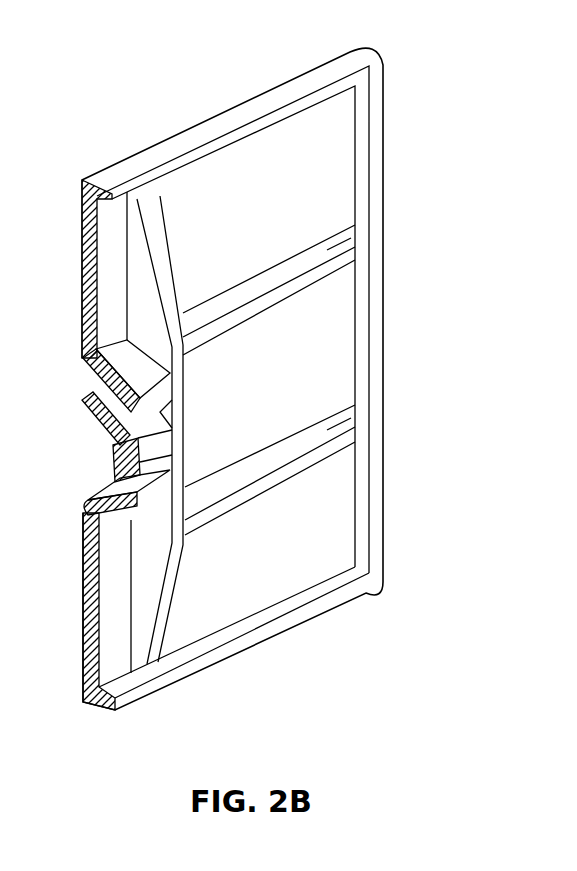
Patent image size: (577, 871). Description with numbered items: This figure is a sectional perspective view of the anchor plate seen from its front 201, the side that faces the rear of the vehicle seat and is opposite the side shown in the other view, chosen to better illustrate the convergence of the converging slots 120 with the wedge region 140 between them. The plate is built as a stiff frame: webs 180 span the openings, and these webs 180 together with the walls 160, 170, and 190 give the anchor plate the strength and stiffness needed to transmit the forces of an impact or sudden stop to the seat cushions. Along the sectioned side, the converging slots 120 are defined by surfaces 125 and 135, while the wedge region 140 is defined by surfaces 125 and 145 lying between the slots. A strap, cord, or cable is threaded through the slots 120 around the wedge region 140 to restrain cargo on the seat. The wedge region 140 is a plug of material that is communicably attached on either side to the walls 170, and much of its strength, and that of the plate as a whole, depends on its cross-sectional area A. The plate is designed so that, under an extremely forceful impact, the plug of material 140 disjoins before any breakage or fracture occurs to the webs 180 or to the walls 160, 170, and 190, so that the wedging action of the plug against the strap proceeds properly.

The front 201 is at (404, 73).
The wall 190 is at (284, 106).
The web 180 is at (335, 163).
The wall 160 is at (325, 243).
The wall 170 is at (140, 267).
The surface 135 is at (95, 380).
The converging slot 120 is at (86, 378).
The surface 125 is at (106, 388).
The wedge region 140 is at (110, 470).
The surface 145 is at (103, 450).
The cross-sectional area A is at (176, 438).